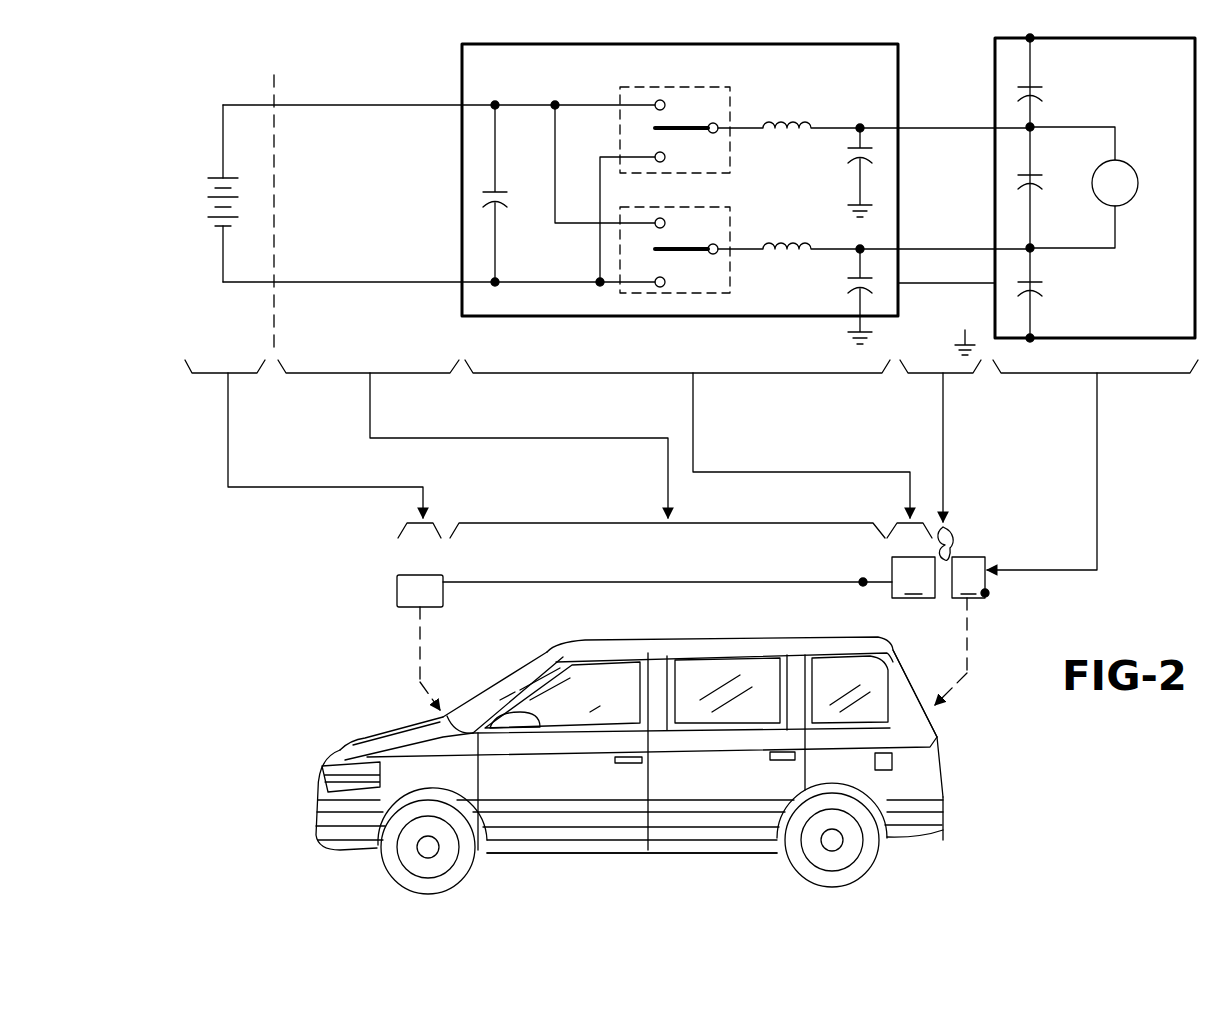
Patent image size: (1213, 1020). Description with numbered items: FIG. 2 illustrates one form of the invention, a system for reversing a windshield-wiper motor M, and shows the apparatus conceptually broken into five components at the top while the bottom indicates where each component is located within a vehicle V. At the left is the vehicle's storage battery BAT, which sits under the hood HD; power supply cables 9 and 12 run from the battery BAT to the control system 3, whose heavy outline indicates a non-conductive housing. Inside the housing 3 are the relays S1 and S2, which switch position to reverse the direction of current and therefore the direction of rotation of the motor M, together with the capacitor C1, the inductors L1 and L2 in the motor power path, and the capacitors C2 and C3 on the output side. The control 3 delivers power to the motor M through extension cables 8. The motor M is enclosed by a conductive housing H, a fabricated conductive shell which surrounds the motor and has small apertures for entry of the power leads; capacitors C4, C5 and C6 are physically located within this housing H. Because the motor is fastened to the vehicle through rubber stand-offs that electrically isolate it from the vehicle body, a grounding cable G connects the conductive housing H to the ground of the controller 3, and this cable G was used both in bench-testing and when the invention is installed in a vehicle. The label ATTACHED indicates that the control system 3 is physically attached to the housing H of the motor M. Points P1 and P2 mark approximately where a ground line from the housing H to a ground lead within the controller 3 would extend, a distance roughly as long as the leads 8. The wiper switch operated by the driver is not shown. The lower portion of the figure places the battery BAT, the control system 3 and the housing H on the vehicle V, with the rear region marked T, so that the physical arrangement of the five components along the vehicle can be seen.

The controller housing 3 is at (462, 57).
The extension cables 8 is at (943, 417).
The power supply cable 9 is at (345, 281).
The power supply cable 12 is at (348, 106).
The storage battery BAT is at (325, 407).
The capacitor C1 is at (509, 193).
The capacitor C2 is at (841, 170).
The capacitor C3 is at (841, 294).
The capacitor C4 is at (1046, 180).
The capacitor C5 is at (1046, 92).
The capacitor C6 is at (1046, 287).
The inductor L1 is at (874, 108).
The inductor L2 is at (874, 229).
The relay S1 is at (675, 130).
The relay S2 is at (675, 250).
The electric motor M is at (1084, 187).
The conductive housing H is at (1064, 369).
The grounding cable G is at (971, 291).
The point P1 is at (989, 593).
The point P2 is at (862, 577).
The attached label ATTACHED is at (942, 601).
The vehicle V is at (321, 765).
The hood HD is at (385, 733).
The tailgate/rear T is at (946, 705).